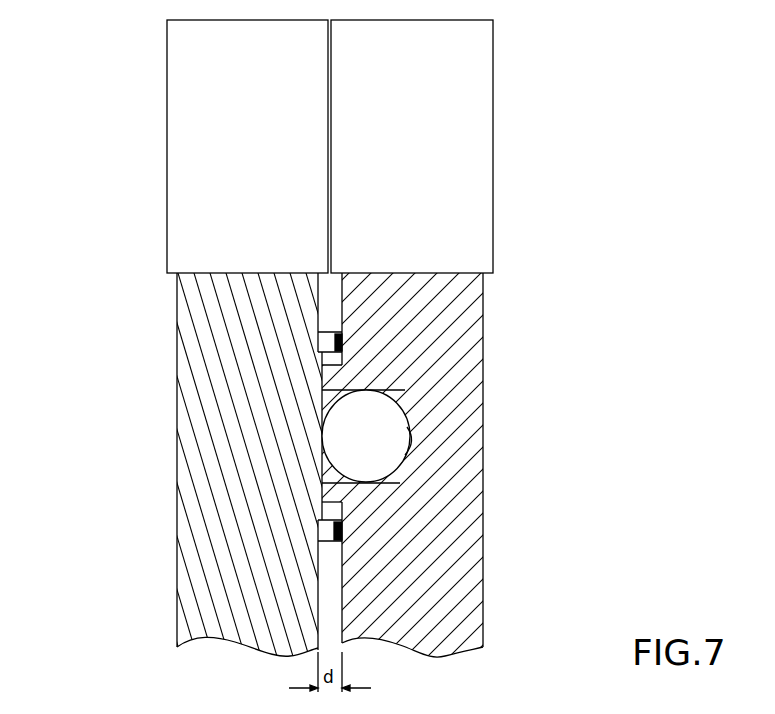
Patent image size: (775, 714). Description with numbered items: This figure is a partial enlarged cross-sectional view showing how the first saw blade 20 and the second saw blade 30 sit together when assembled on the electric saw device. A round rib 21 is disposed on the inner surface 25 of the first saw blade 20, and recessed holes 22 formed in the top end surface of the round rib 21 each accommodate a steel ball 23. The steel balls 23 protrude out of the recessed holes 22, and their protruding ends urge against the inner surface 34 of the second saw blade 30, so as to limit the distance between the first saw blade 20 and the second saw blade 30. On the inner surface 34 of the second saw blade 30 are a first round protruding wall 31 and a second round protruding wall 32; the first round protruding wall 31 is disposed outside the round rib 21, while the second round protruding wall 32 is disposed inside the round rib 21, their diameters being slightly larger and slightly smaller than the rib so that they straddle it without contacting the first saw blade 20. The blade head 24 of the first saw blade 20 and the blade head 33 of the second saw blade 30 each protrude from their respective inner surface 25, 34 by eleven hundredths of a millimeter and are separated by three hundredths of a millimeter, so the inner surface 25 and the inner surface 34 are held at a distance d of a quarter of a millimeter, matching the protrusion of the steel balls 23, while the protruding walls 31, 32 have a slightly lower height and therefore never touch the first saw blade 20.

The first saw blade 20 is at (468, 304).
The round rib 21 is at (332, 500).
The recessed hole 22 is at (410, 440).
The steel ball 23 is at (378, 410).
The blade head 24 is at (482, 196).
The inner surface 25 is at (341, 600).
The second saw blade 30 is at (186, 480).
The first round protruding wall 31 is at (335, 342).
The second round protruding wall 32 is at (321, 543).
The blade head 33 is at (177, 206).
The inner surface 34 is at (322, 576).